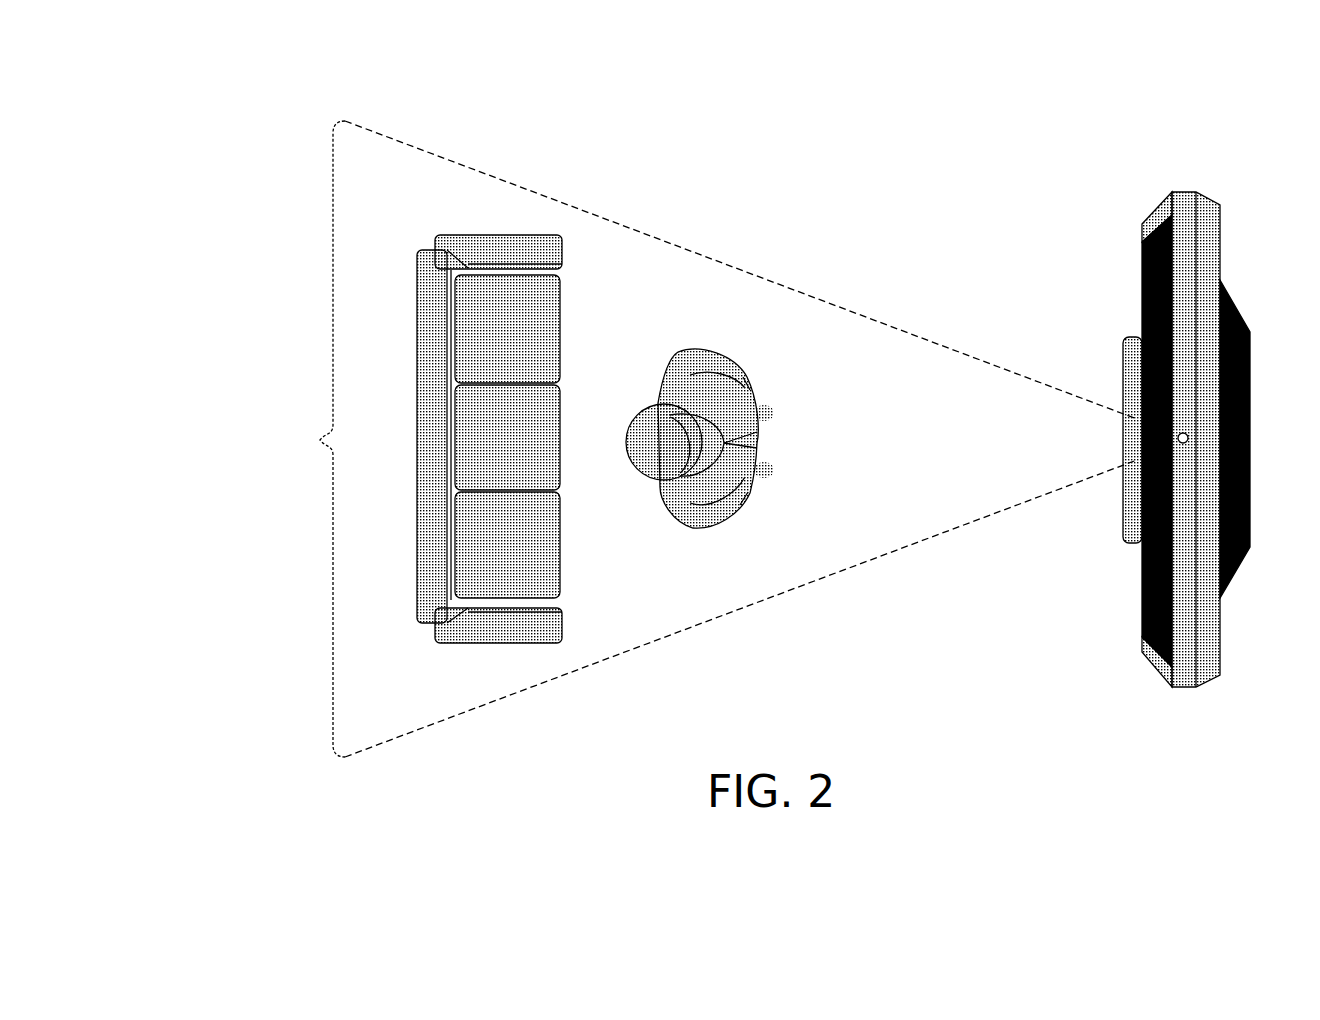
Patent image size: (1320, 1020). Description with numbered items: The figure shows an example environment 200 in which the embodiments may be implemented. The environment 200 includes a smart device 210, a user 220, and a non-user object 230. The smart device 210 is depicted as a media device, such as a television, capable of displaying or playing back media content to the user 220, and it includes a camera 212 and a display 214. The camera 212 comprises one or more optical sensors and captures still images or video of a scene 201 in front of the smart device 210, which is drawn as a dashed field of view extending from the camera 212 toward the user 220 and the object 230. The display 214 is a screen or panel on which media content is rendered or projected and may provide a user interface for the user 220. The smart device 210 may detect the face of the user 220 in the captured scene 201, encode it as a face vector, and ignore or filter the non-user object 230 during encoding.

The environment 200 is at (226, 116).
The scene 201 is at (691, 439).
The smart device 210 is at (1193, 190).
The camera 212 is at (1184, 432).
The display 214 is at (1138, 293).
The user 220 is at (707, 350).
The non-user object 230 is at (470, 235).